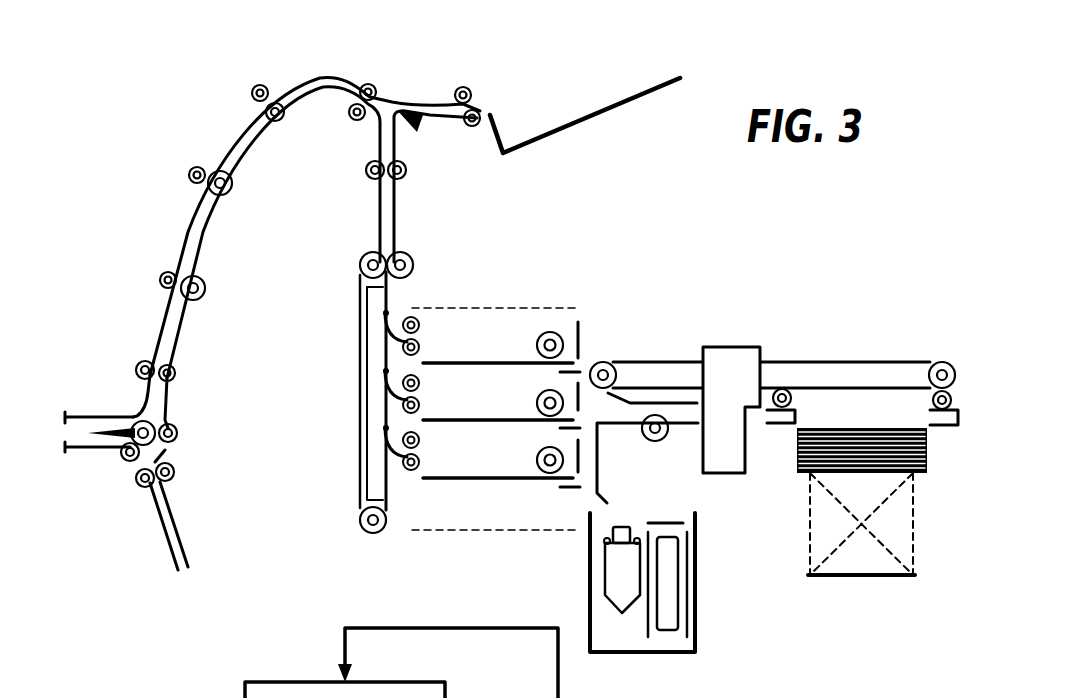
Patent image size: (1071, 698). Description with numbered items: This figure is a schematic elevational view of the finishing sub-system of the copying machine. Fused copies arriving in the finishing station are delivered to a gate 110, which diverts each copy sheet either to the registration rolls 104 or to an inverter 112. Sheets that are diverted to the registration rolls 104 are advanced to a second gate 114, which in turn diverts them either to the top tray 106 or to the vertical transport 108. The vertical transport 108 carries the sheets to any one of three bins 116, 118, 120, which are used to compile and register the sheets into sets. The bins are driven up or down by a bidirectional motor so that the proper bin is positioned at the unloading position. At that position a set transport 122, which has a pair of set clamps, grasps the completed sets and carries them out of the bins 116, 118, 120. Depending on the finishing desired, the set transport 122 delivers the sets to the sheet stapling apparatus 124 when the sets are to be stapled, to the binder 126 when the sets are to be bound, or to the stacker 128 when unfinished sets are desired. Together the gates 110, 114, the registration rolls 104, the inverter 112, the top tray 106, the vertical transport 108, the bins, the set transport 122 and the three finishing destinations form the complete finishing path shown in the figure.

The registration rolls 104 is at (260, 84).
The top tray 106 is at (583, 117).
The vertical transport 108 is at (382, 293).
The gate 110 is at (108, 435).
The inverter 112 is at (172, 503).
The gate 114 is at (417, 132).
The bin 116 is at (477, 360).
The bin 118 is at (470, 420).
The bin 120 is at (503, 480).
The set transport 122 is at (683, 390).
The sheet stapling apparatus 124 is at (742, 368).
The binder 126 is at (695, 578).
The stacker 128 is at (913, 528).